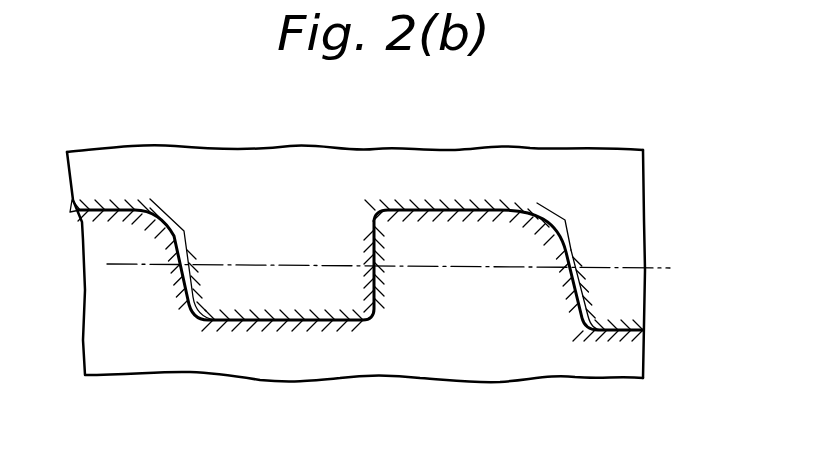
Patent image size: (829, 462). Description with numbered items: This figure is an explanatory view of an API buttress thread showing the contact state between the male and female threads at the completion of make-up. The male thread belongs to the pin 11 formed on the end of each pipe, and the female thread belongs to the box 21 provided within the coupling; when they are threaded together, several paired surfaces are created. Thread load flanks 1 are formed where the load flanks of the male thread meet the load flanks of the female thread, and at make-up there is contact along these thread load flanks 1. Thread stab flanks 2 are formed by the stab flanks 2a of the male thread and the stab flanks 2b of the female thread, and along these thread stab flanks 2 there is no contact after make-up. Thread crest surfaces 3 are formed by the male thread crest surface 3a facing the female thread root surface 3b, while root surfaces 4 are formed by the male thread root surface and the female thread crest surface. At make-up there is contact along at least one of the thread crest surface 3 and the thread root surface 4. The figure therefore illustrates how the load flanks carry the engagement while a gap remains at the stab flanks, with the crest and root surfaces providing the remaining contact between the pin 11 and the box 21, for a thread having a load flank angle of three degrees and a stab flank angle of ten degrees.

The thread load flanks 1 is at (372, 243).
The pin 11 is at (535, 357).
The box 21 is at (470, 160).
The thread stab flanks 2 is at (583, 280).
The stab flanks of the male thread 2a is at (567, 277).
The stab flanks of the female thread 2b is at (578, 256).
The thread crest surfaces 3 is at (430, 208).
The male thread crest surface 3a is at (503, 213).
The female thread root surface 3b is at (517, 207).
The root surfaces 4 is at (262, 318).